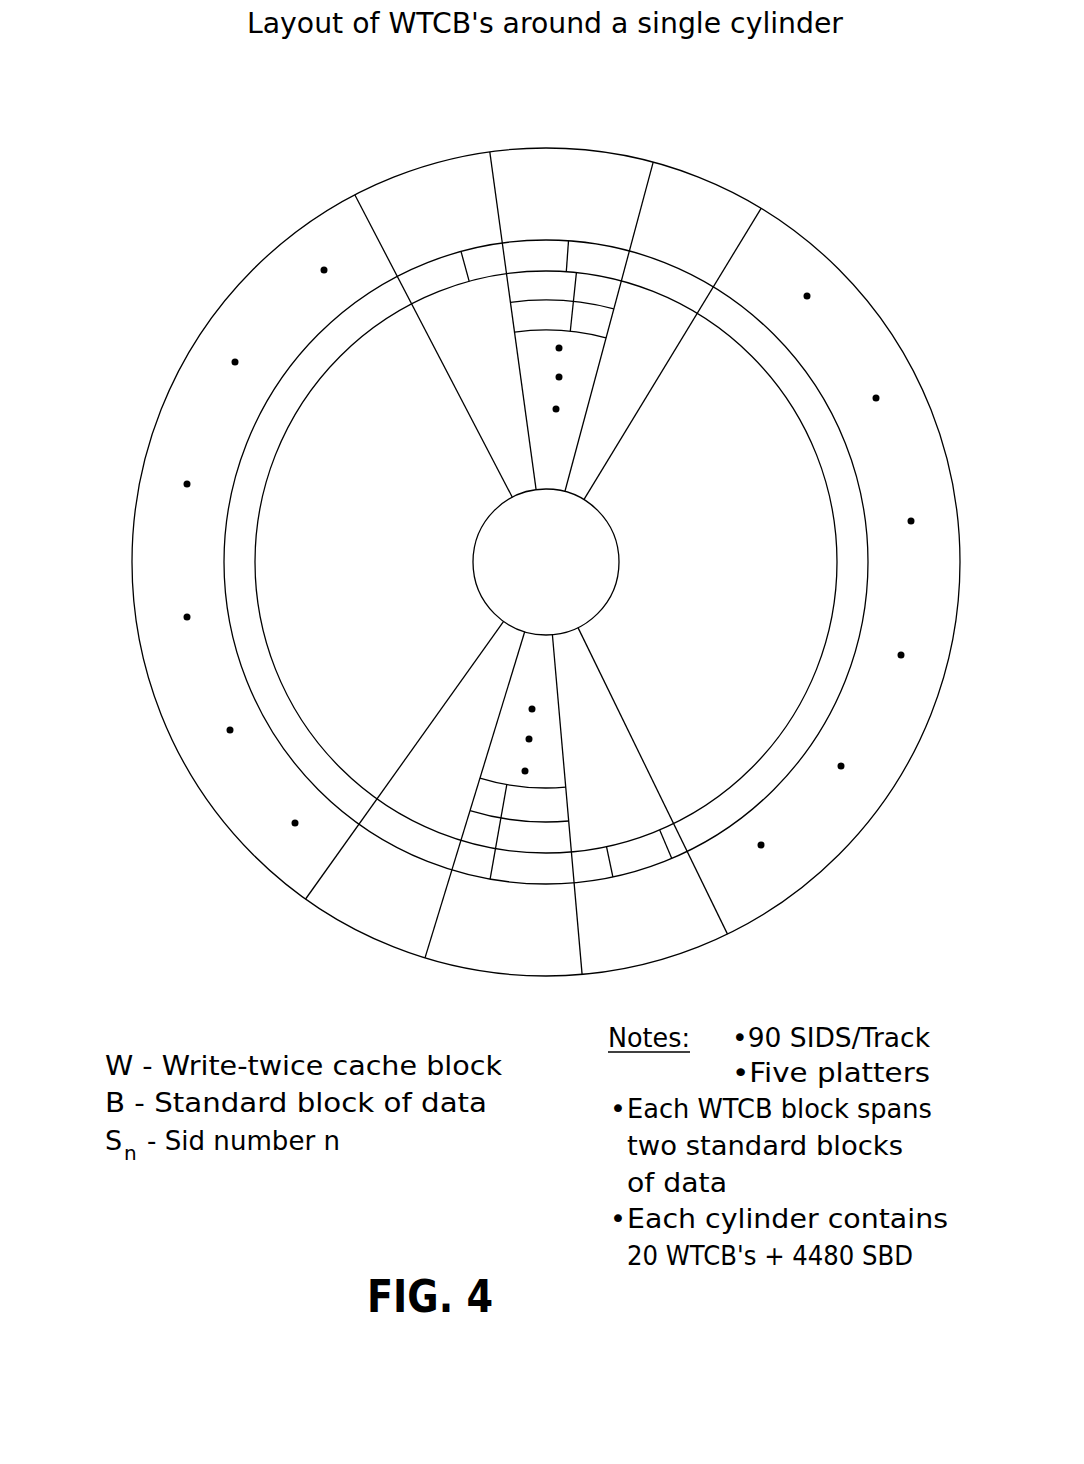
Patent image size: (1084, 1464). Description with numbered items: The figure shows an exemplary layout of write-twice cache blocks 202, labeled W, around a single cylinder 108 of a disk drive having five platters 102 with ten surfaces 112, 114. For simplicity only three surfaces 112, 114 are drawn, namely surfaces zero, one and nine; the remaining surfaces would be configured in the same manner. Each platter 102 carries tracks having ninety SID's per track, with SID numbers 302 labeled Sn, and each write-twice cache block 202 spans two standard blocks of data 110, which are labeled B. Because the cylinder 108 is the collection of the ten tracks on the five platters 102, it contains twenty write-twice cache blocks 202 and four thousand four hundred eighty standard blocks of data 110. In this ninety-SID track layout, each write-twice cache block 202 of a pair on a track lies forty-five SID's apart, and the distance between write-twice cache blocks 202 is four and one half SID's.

The disk drive platter 102 is at (367, 195).
The single cylinder 108 is at (323, 373).
The standard block of data 110 is at (492, 278).
The surface 112 is at (613, 168).
The surface 114 is at (427, 178).
The write-twice cache block 202 is at (421, 302).
The SID number 302 is at (501, 121).